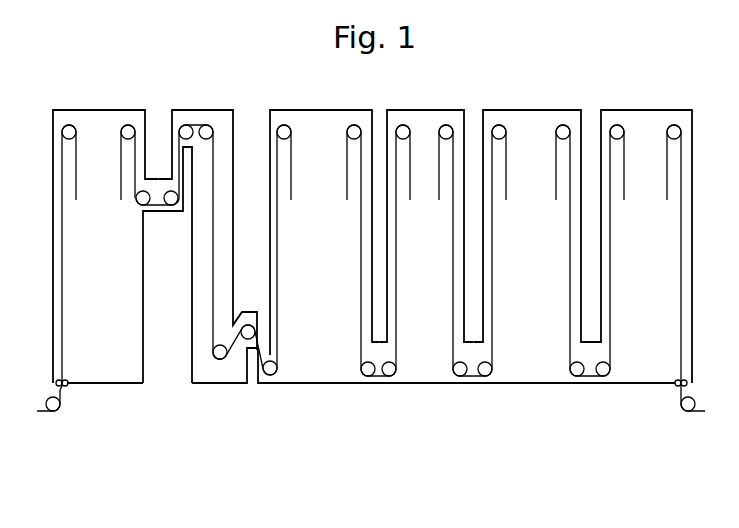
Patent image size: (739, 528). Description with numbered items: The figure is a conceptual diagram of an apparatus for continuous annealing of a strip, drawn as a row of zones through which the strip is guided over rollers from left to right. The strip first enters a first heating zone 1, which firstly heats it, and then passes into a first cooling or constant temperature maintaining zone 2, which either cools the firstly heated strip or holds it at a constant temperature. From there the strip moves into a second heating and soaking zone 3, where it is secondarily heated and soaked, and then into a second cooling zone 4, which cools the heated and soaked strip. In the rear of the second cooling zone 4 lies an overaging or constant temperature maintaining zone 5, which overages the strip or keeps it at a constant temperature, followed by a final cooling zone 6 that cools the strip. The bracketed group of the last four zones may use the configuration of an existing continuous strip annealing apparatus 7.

The first heating zone 1 is at (110, 360).
The first cooling or constant temperature maintaining zone 2 is at (204, 368).
The second heating and soaking zone 3 is at (318, 360).
The second cooling zone 4 is at (427, 360).
The overaging or constant temperature maintaining zone 5 is at (535, 360).
The final cooling zone 6 is at (648, 280).
The existing continuous strip annealing apparatus 7 is at (487, 301).